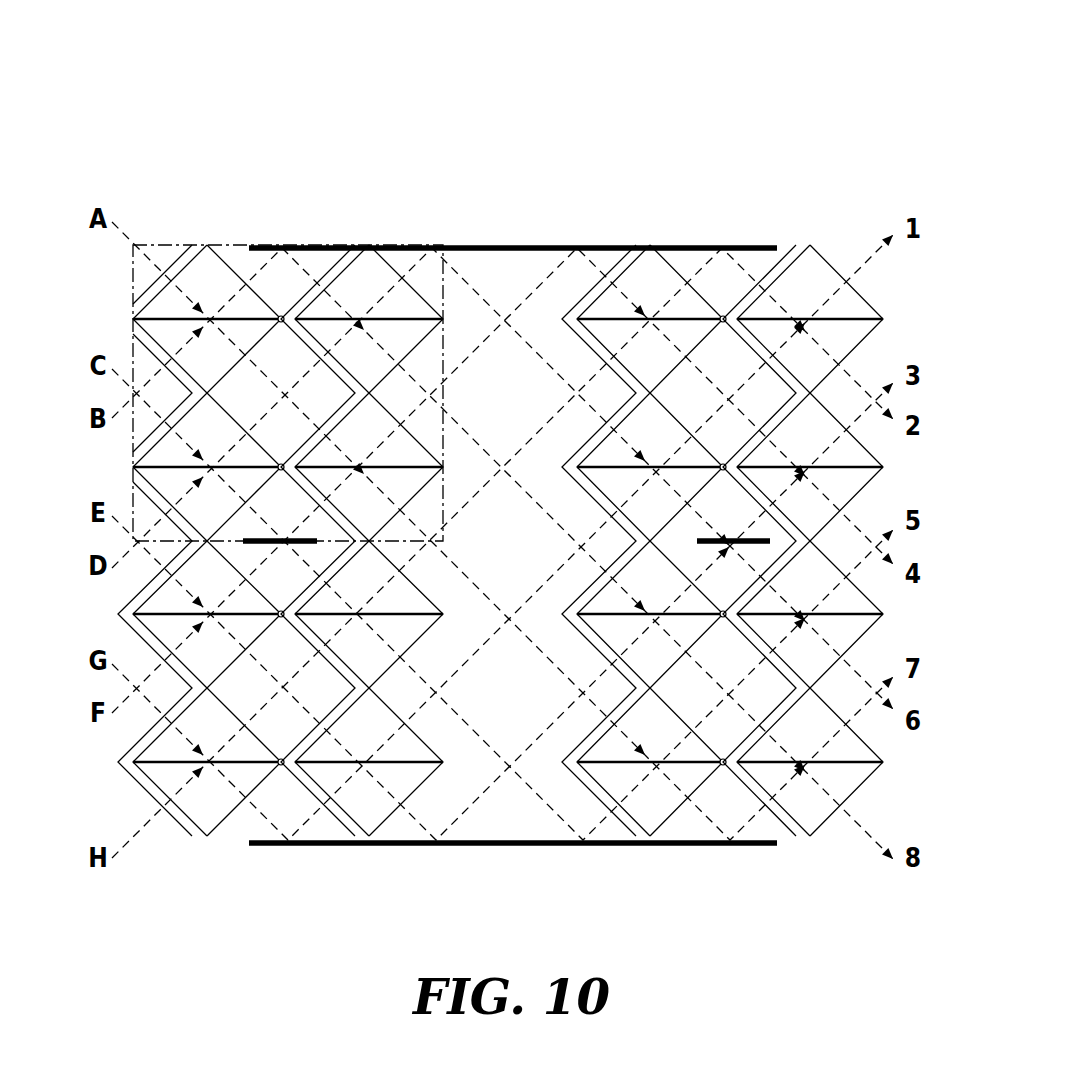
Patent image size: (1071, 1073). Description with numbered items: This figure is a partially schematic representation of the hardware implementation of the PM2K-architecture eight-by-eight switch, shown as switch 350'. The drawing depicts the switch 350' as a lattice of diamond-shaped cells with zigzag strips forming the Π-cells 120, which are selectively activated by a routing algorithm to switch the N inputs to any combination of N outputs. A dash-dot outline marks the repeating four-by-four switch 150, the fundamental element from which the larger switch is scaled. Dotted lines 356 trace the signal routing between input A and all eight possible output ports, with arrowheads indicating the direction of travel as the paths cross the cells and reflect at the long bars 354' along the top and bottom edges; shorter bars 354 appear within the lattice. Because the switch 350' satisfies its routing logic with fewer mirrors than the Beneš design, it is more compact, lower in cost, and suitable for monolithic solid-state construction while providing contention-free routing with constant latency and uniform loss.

The 8×8 switch hardware implementation 350' is at (508, 423).
The dotted lines 356 is at (130, 241).
The 4×4 switch 150 is at (183, 236).
The reflecting bar 354' is at (513, 537).
The Π-cell 120 is at (784, 247).
The short reflecting segment 354 is at (506, 515).